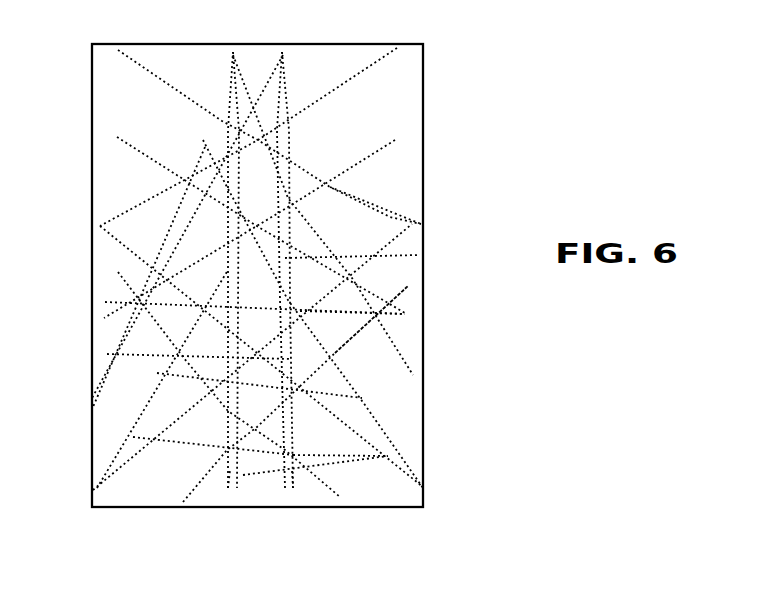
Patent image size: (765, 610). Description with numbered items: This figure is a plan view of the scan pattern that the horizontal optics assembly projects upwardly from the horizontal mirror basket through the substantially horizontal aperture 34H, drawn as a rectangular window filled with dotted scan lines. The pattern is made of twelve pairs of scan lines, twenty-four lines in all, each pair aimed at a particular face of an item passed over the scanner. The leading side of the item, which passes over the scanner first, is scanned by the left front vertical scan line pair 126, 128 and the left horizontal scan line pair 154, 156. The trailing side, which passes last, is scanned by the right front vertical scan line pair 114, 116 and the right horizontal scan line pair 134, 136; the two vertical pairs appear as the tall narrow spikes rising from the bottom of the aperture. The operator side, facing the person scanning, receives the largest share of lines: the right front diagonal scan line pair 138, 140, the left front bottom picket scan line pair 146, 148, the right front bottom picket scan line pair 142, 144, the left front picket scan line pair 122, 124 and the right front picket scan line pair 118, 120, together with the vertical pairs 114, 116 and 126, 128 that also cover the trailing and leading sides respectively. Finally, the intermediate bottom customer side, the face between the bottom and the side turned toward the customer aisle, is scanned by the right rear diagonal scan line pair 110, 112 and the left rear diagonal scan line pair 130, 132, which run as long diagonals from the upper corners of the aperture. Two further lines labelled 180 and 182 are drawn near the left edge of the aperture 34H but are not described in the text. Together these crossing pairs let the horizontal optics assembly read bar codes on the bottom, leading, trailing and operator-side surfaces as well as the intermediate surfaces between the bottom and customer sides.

The horizontal aperture 34H is at (424, 507).
The right rear diagonal scan line 110 is at (130, 50).
The right rear diagonal scan line 112 is at (128, 147).
The right front vertical scan line 114 is at (250, 96).
The right front vertical scan line 116 is at (205, 147).
The right front picket scan line 118 is at (362, 400).
The right front picket scan line 120 is at (388, 455).
The left front picket scan line 122 is at (140, 440).
The left front picket scan line 124 is at (157, 373).
The left front vertical scan line 126 is at (265, 95).
The left front vertical scan line 128 is at (315, 137).
The left rear diagonal scan line 130 is at (392, 50).
The left rear diagonal scan line 132 is at (395, 134).
The right horizontal scan line 134 is at (217, 506).
The right horizontal scan line 136 is at (292, 479).
The right front diagonal scan line 138 is at (420, 224).
The right front diagonal scan line 140 is at (406, 280).
The right front bottom picket scan line 142 is at (412, 255).
The right front bottom picket scan line 144 is at (406, 314).
The left front bottom picket scan line 146 is at (104, 306).
The left front bottom picket scan line 148 is at (105, 353).
The left horizontal scan line 154 is at (305, 506).
The left horizontal scan line 156 is at (229, 479).
The light ray 180 is at (98, 225).
The light ray 182 is at (98, 281).